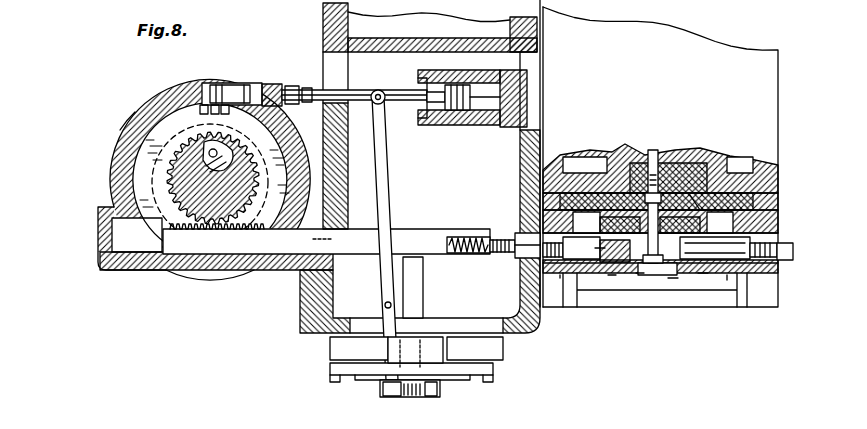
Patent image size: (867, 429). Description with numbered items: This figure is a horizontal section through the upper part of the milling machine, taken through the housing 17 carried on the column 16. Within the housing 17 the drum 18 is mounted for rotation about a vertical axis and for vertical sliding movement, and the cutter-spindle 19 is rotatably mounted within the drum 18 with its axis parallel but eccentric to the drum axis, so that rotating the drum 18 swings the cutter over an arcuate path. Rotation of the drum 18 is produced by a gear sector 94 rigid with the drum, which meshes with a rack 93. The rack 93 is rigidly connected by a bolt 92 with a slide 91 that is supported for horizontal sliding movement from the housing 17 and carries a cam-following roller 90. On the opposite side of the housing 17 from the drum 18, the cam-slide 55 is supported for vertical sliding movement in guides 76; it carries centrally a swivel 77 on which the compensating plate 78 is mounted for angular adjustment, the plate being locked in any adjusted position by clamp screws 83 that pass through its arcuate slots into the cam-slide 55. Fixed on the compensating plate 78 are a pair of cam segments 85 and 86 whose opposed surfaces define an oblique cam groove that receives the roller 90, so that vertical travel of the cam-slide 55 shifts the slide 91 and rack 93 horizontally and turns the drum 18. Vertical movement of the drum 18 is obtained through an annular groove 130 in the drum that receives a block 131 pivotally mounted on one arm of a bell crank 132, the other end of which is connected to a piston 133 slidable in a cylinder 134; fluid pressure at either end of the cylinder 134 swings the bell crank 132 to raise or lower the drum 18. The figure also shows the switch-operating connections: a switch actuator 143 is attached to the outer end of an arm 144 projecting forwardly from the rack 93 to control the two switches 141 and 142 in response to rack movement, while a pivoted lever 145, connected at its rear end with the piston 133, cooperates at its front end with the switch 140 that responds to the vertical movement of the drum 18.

The column 16 is at (323, 14).
The housing 17 is at (113, 150).
The drum 18 is at (140, 175).
The cutter-spindle 19 is at (202, 143).
The annular groove 130 is at (132, 135).
The block 131 is at (230, 110).
The bell crank 132 is at (223, 86).
The piston 133 is at (480, 103).
The cylinder 134 is at (428, 78).
The pivoted lever 145 is at (390, 220).
The arm 144 is at (417, 303).
The rack 93 is at (238, 245).
The gear sector 94 is at (207, 223).
The guides 76 is at (520, 212).
The swivel 77 is at (657, 193).
The cam-slide 55 is at (687, 177).
The compensating plate 78 is at (690, 195).
The clamp screws 83 is at (562, 277).
The bolt 92 is at (600, 250).
The cam segment 85 is at (612, 277).
The cam-following roller 90 is at (640, 273).
The slide 91 is at (673, 280).
The cam segment 86 is at (703, 273).
The switch 141 is at (337, 355).
The switch 142 is at (498, 360).
The switch actuator 143 is at (467, 382).
The switch 140 is at (433, 357).